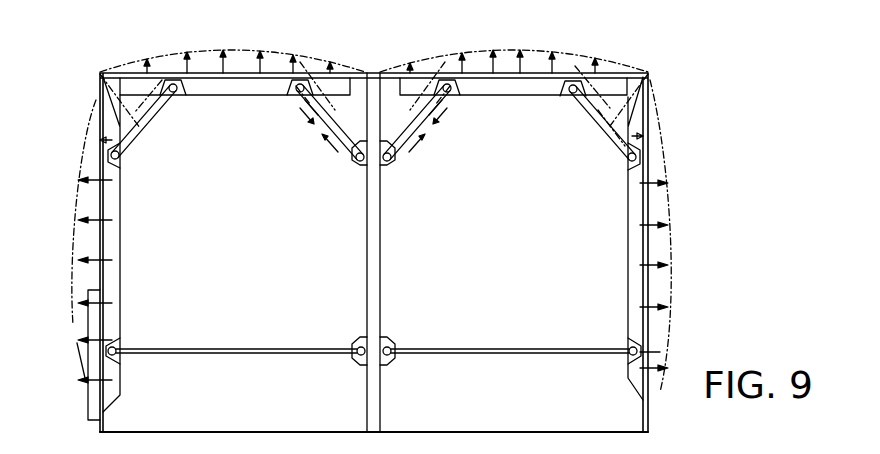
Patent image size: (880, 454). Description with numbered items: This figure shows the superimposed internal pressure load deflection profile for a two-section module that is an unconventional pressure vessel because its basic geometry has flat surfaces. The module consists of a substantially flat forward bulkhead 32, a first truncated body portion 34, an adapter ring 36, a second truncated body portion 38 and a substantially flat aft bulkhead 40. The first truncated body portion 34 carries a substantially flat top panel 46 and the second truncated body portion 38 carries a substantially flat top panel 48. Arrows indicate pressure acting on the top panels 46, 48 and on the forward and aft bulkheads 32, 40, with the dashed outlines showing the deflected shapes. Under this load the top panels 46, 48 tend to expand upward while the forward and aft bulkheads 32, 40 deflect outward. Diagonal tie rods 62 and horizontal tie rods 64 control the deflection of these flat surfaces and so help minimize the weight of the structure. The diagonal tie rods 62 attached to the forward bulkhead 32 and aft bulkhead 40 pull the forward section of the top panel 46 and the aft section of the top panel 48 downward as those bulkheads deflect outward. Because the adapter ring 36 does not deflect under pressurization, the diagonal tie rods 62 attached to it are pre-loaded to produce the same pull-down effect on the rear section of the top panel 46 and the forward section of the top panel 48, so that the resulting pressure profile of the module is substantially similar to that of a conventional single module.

The forward bulkhead 32 is at (120, 200).
The first truncated body portion 34 is at (257, 264).
The adapter ring 36 is at (383, 313).
The second truncated body portion 38 is at (506, 264).
The aft bulkhead 40 is at (628, 198).
The top panel 46 is at (242, 62).
The top panel 48 is at (537, 62).
The diagonal tie rods 62 is at (118, 96).
The horizontal tie rods 64 is at (300, 356).